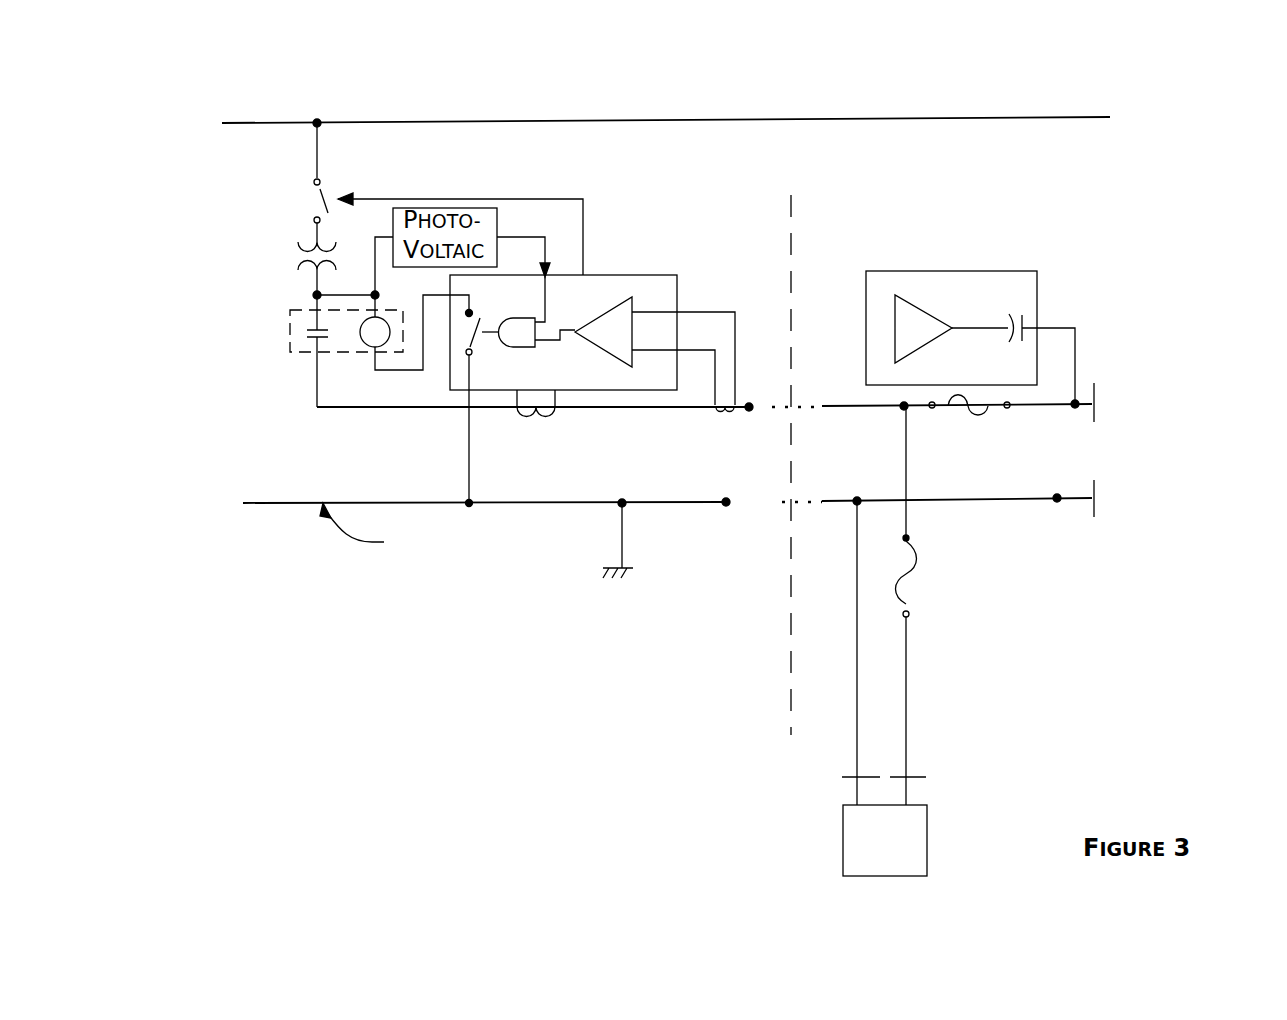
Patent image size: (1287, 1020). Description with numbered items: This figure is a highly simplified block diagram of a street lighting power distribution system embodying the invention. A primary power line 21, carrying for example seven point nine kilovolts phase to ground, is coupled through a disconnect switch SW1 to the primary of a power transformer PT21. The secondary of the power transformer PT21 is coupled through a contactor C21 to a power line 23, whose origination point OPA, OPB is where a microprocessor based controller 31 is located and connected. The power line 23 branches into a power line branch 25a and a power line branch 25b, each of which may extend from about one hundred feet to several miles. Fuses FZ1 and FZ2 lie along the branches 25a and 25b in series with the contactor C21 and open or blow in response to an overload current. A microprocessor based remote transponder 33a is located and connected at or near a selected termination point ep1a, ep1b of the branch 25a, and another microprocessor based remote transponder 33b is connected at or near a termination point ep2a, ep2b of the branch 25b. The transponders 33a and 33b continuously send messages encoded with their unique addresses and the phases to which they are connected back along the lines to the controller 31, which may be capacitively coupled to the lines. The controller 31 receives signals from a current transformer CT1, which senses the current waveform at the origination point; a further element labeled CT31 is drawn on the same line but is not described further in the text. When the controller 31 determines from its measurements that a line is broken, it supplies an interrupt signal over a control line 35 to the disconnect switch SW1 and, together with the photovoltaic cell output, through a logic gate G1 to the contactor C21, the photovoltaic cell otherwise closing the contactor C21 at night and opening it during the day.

The primary power line 21 is at (525, 123).
The control line 35 is at (431, 199).
The microprocessor based controller 31 is at (610, 283).
The power line 23 is at (337, 407).
The power line branch 25a is at (1037, 408).
The power line branch 25b is at (906, 692).
The remote transponder 33a is at (1037, 290).
The remote transponder 33b is at (891, 861).
The disconnect switch SW1 is at (298, 200).
The power transformer PT21 is at (274, 273).
The contactor C21 is at (283, 337).
The logic gate G1 is at (528, 318).
The current transformer CT1 is at (557, 419).
The current transformer CT31 is at (726, 413).
The fuse FZ1 is at (969, 418).
The fuse FZ2 is at (931, 576).
The origination point OPA is at (749, 407).
The origination point OPB is at (726, 502).
The termination point ep1a is at (1075, 404).
The termination point ep1b is at (1057, 498).
The termination point ep2a is at (944, 775).
The termination point ep2b is at (828, 775).